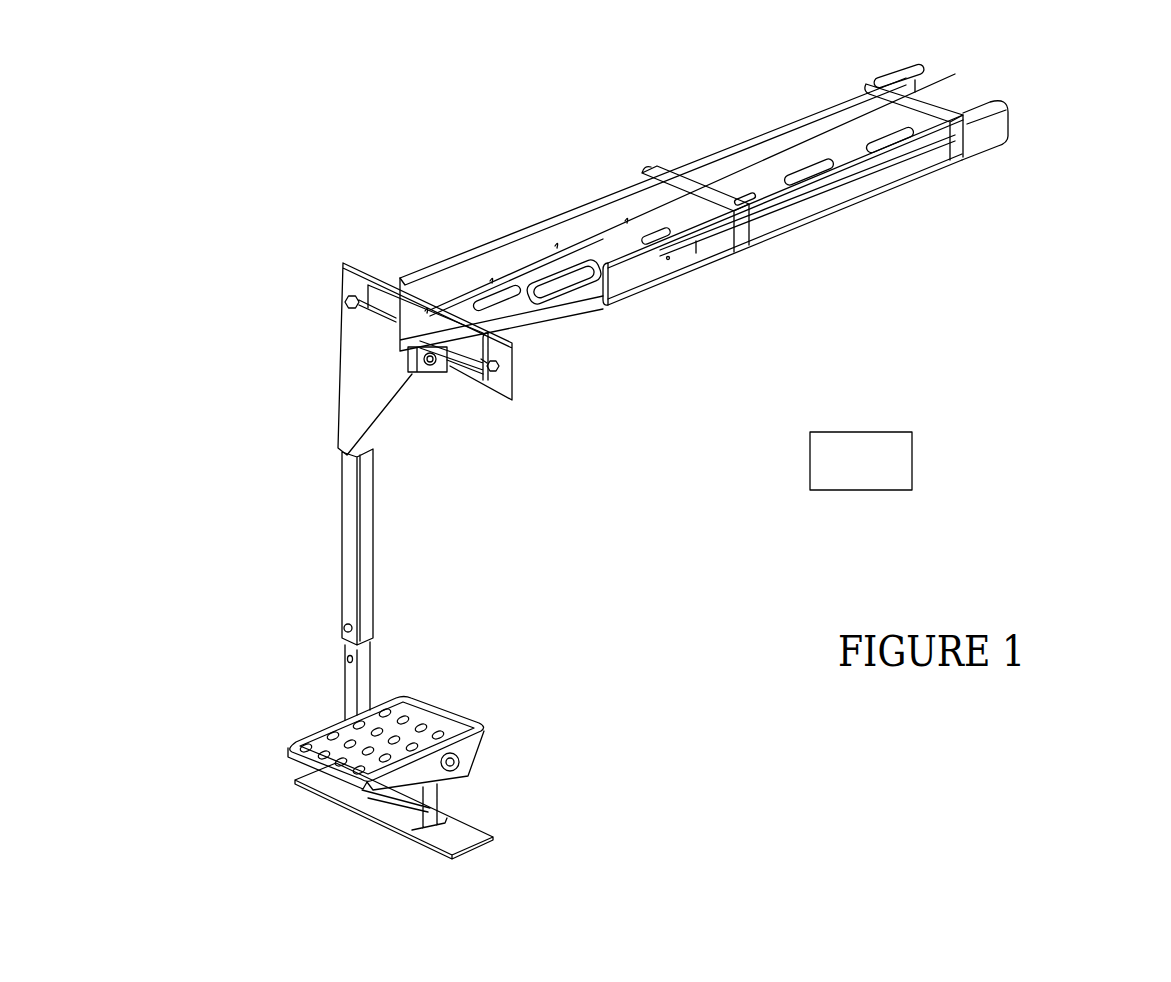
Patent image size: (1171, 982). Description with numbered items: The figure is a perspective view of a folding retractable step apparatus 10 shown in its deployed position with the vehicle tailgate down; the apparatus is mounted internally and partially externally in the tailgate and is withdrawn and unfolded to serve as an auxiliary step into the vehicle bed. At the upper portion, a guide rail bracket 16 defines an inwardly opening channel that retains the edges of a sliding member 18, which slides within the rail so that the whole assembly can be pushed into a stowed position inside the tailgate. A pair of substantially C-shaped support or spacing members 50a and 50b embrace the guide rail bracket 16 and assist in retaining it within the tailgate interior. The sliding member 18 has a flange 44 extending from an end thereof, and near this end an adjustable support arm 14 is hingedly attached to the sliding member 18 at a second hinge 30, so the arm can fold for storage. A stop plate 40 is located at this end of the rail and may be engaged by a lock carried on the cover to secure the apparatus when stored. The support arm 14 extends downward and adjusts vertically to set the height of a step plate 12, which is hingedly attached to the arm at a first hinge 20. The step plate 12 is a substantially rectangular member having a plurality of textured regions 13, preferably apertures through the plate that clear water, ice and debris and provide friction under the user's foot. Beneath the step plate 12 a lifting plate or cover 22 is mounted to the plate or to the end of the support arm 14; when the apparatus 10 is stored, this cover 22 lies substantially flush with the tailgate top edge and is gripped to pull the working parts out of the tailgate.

The folding retractable step apparatus 10 is at (775, 372).
The step plate 12 is at (463, 715).
The textured regions 13 is at (325, 732).
The adjustable support arm 14 is at (335, 552).
The guide rail bracket 16 is at (740, 140).
The sliding member 18 is at (606, 240).
The first hinge 20 is at (473, 767).
The lifting plate or cover 22 is at (477, 854).
The second hinge 30 is at (440, 381).
The stop plate 40 is at (366, 282).
The flange 44 is at (404, 375).
The first support member 50a is at (743, 237).
The second support member 50b is at (960, 140).